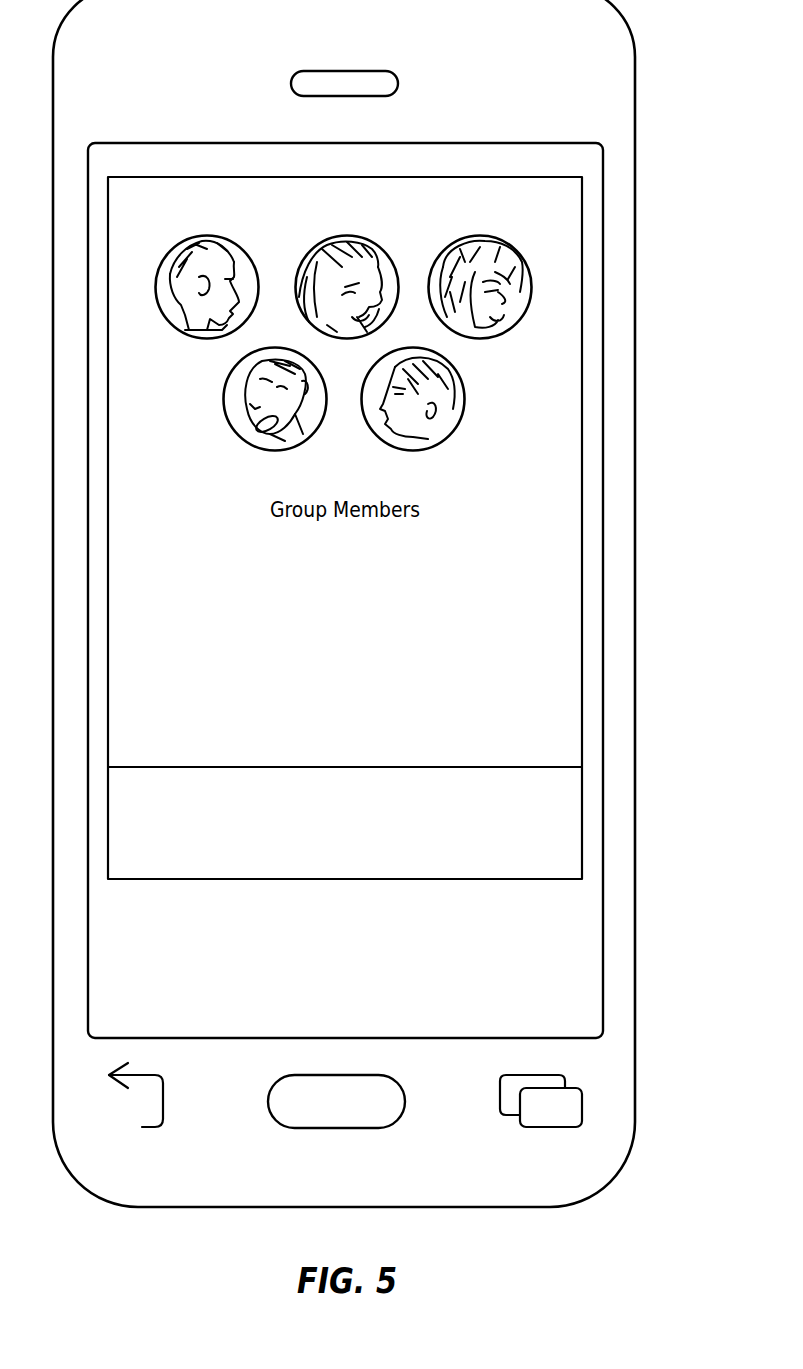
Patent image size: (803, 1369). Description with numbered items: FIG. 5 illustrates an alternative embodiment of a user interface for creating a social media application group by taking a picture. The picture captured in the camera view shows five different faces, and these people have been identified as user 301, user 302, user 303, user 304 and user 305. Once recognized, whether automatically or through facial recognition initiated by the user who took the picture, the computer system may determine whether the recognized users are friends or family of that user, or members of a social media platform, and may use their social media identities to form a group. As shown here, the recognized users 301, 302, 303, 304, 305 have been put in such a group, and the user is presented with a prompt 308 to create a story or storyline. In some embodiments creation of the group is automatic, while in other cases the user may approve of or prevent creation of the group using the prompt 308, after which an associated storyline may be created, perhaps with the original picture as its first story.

The user 301 is at (205, 234).
The user 302 is at (345, 234).
The user 303 is at (232, 372).
The user 304 is at (482, 234).
The user 305 is at (458, 372).
The prompt 308 is at (562, 818).